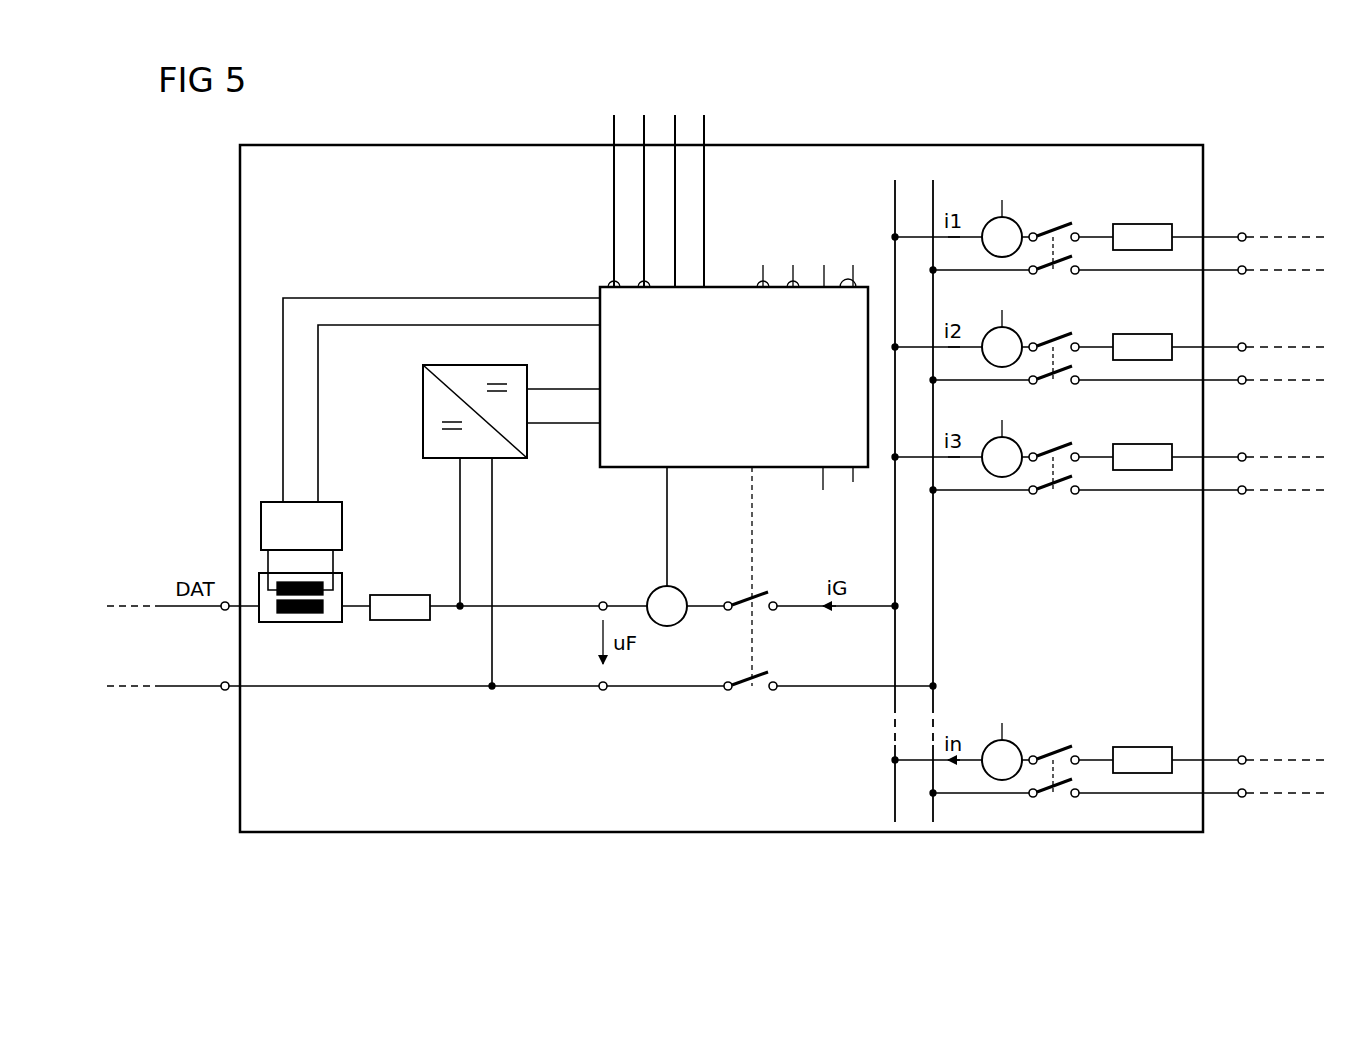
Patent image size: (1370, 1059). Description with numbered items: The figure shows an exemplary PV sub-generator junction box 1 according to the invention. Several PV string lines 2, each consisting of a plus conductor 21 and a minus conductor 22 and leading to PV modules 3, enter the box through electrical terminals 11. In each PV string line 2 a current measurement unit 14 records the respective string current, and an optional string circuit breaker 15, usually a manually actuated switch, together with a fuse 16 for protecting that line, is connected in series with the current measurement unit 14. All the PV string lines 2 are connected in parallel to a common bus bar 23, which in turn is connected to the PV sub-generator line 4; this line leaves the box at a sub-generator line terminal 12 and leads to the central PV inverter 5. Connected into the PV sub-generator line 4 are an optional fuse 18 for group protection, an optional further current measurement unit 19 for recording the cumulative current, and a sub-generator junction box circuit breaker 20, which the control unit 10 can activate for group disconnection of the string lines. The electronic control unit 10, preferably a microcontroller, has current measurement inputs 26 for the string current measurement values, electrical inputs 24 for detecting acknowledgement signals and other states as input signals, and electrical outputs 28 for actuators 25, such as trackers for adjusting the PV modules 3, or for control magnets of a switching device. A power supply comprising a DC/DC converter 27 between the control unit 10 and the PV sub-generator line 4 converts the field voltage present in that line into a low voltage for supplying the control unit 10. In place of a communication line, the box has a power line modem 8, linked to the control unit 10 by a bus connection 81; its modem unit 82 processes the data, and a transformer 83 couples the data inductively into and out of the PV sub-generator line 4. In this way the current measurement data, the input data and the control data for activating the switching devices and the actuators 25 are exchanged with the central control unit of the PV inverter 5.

The PV sub-generator junction box 1 is at (1125, 145).
The PV string line 2 is at (1262, 268).
The PV module 3 is at (1336, 775).
The PV sub-generator line 4 is at (168, 606).
The central PV inverter 5 is at (118, 650).
The power line modem 8 is at (355, 558).
The control unit 10 is at (600, 455).
The electrical terminals 11 is at (1240, 232).
The sub-generator line terminal 12 is at (225, 600).
The current measurement unit 14 is at (1012, 220).
The string circuit breaker 15 is at (1068, 223).
The fuse 16 is at (1145, 224).
The fuse 18 is at (400, 620).
The further current measurement unit 19 is at (652, 592).
The sub-generator junction box circuit breaker 20 is at (745, 592).
The plus conductor 21 is at (1295, 234).
The minus conductor 22 is at (1285, 382).
The common bus bar 23 is at (893, 207).
The electrical inputs 24 is at (853, 470).
The actuator 25 is at (659, 130).
The current measurement inputs 26 is at (778, 290).
The voltage converter 27 is at (423, 413).
The electrical outputs 28 is at (640, 288).
The bus connection 81 is at (340, 298).
The modem unit 82 is at (342, 535).
The transformer 83 is at (285, 622).